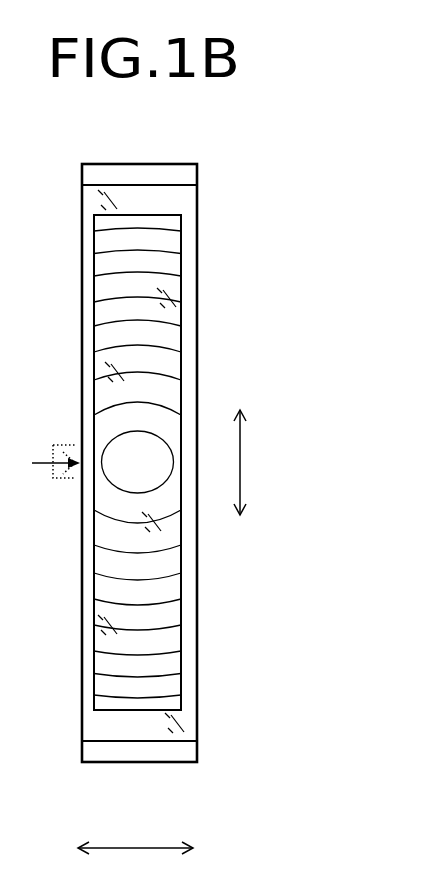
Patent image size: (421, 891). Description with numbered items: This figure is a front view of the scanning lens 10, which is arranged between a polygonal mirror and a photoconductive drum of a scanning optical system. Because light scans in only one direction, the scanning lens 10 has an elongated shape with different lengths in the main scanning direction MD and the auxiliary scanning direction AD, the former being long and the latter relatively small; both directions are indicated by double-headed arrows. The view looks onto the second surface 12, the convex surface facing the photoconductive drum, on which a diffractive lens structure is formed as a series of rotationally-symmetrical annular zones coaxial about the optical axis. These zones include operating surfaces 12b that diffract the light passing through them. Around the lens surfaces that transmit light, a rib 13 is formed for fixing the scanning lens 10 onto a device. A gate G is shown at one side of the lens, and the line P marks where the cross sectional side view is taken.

The scanning lens 10 is at (208, 198).
The second surface 12 is at (165, 282).
The operating surfaces 12b is at (150, 567).
The rib 13 is at (188, 335).
The line P- P is at (139, 163).
The gate G is at (63, 444).
The main scanning direction MD is at (263, 462).
The auxiliary scanning direction AD is at (135, 864).